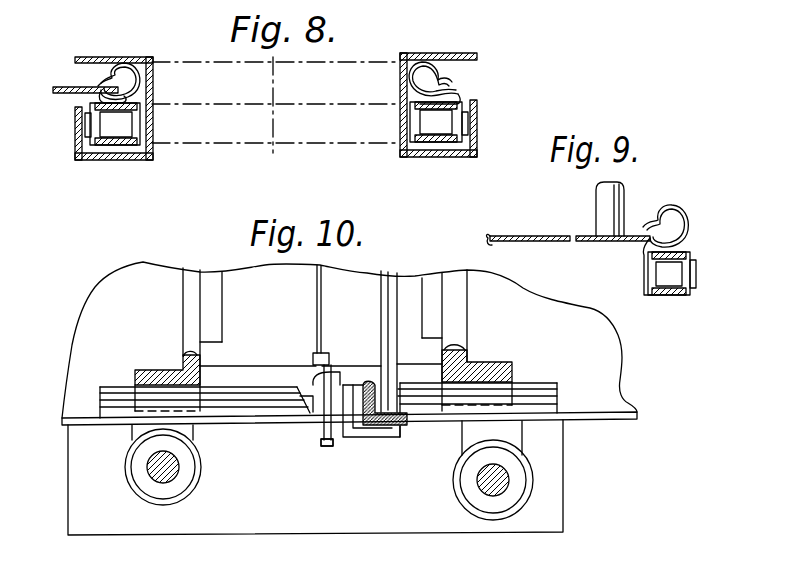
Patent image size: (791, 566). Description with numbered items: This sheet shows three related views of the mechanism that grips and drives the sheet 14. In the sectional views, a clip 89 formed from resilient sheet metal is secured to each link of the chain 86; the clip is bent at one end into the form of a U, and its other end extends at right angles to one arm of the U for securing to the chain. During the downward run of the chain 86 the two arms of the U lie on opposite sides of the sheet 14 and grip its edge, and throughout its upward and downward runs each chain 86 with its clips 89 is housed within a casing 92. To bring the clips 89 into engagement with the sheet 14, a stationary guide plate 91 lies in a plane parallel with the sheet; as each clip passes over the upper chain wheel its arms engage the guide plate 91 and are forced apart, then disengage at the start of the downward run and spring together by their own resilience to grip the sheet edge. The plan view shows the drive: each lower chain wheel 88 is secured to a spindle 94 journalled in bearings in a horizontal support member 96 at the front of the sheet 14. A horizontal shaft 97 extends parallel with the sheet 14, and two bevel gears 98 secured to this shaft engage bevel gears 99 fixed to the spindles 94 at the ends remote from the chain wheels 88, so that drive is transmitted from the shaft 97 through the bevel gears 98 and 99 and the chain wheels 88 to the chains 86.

In FIG. 8, the sheet 14 is at (55, 87).
In FIG. 9, the sheet 14 is at (556, 236).
In FIG. 10, the sheet 14 is at (316, 304).
In FIG. 9, the chain 86 is at (660, 294).
In FIG. 10, the chain 86 is at (324, 446).
In FIG. 10, the lower chain wheel 88 is at (325, 408).
In FIG. 9, the clip 89 is at (686, 196).
In FIG. 9, the guide plate 91 is at (590, 243).
In FIG. 8, the casing 92 is at (108, 160).
In FIG. 10, the spindle 94 is at (322, 396).
In FIG. 10, the horizontal support member 96 is at (353, 434).
In FIG. 10, the horizontal shaft 97 is at (381, 292).
In FIG. 10, the bevel gear 98 is at (398, 428).
In FIG. 10, the bevel gear 99 is at (368, 380).